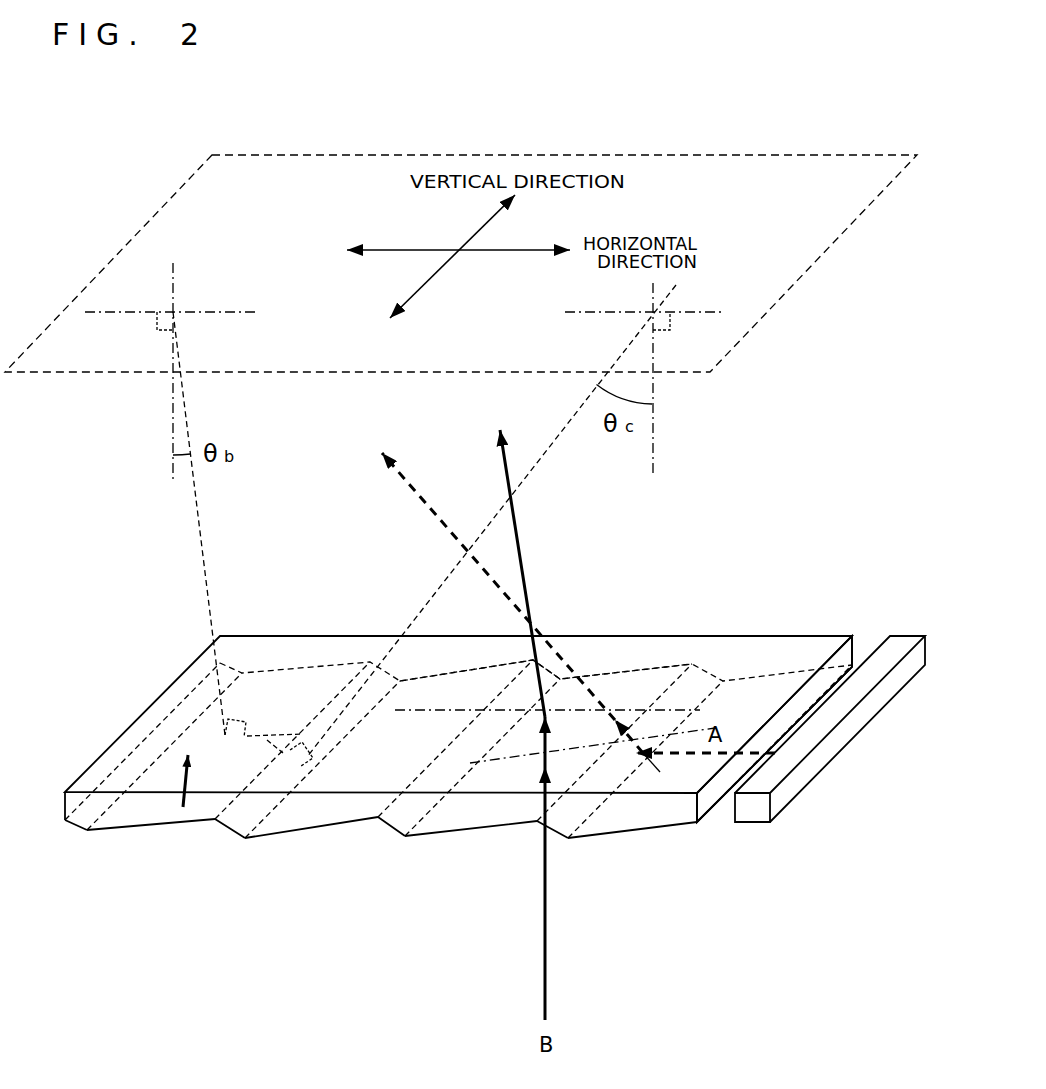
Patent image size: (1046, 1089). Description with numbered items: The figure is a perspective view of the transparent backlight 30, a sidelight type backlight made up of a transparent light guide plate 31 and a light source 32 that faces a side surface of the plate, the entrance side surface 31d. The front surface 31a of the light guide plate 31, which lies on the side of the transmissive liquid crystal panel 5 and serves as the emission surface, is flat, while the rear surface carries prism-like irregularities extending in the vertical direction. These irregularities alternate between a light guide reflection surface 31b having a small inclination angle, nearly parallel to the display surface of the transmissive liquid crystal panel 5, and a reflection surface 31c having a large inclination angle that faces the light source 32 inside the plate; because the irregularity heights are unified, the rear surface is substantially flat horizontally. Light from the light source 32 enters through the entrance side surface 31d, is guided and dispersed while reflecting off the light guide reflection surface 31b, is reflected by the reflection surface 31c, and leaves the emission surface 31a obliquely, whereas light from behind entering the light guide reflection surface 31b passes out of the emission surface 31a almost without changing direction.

The transmissive liquid crystal panel 5 is at (147, 223).
The transparent backlight 30 is at (893, 541).
The transparent light guide plate 31 is at (770, 636).
The front surface (emission surface) 31a is at (618, 655).
The light guide reflection surface 31b is at (157, 808).
The reflection surface 31c is at (80, 832).
The entrance side surface 31d is at (850, 656).
The light source 32 is at (898, 636).